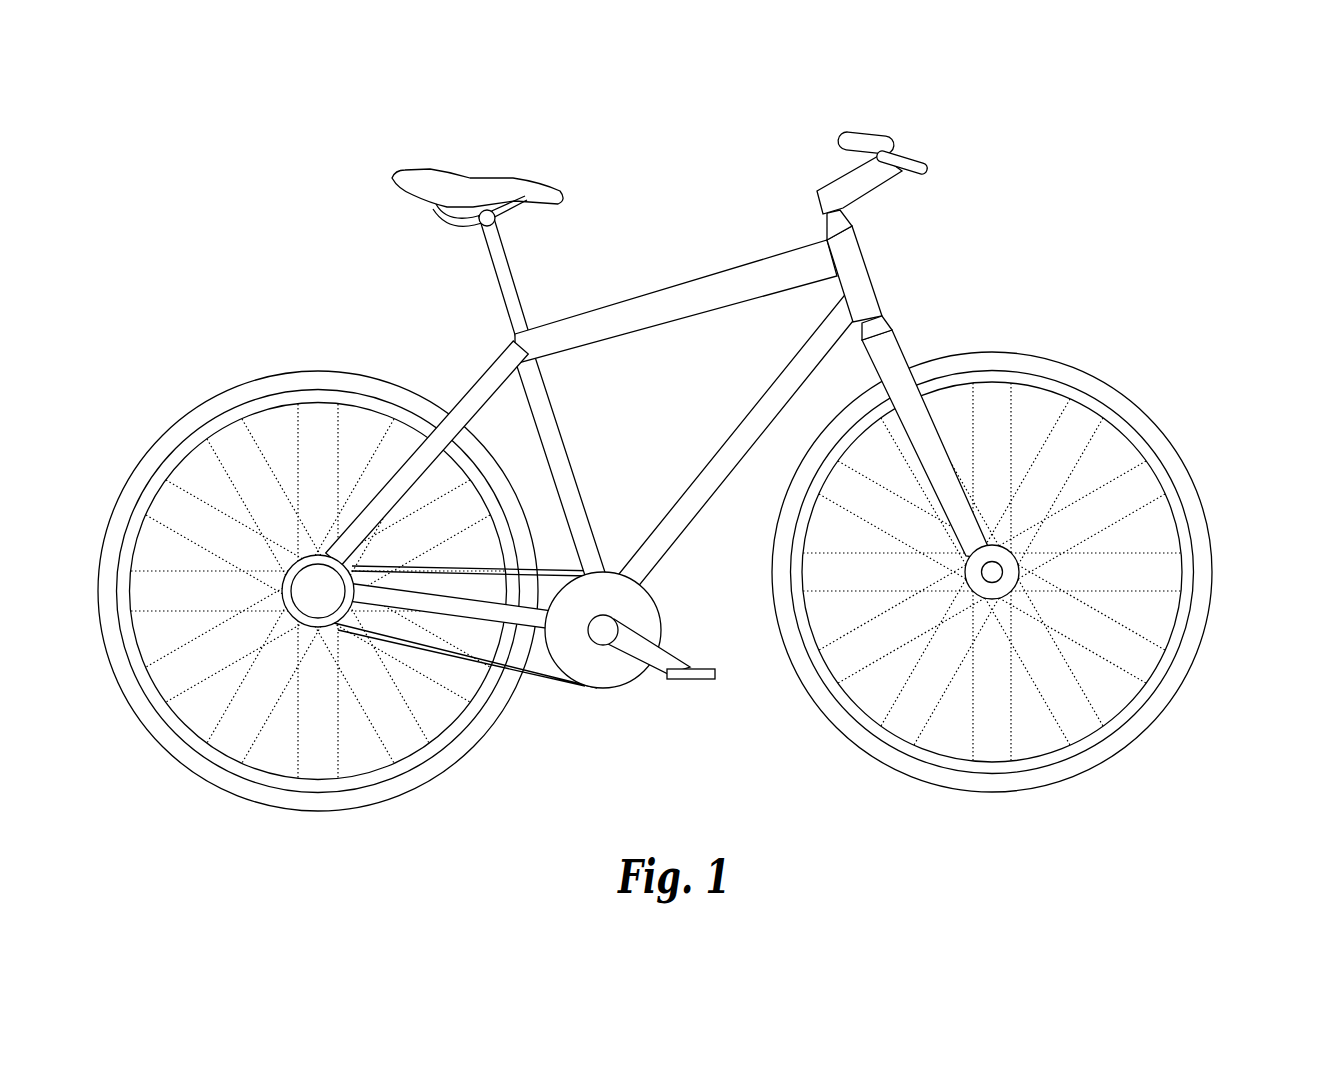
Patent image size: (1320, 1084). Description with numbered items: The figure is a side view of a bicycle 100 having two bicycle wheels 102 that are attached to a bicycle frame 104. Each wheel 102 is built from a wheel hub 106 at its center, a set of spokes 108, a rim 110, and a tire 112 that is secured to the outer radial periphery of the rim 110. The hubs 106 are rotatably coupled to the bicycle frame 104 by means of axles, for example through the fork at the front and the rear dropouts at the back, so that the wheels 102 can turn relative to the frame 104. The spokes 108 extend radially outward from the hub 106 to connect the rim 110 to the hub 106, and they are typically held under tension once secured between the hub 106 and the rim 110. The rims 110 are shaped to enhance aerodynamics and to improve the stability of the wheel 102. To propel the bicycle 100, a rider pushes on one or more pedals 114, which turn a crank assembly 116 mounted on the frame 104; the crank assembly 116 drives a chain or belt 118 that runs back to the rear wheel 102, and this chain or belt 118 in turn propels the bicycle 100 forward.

The bicycle 100 is at (951, 106).
The bicycle wheel 102 is at (301, 378).
The bicycle frame 104 is at (849, 255).
The wheel hub 106 is at (334, 623).
The spoke 108 is at (447, 688).
The rim 110 is at (430, 773).
The tire 112 is at (210, 774).
The pedal 114 is at (693, 679).
The crank assembly 116 is at (632, 602).
The chain or belt 118 is at (527, 577).